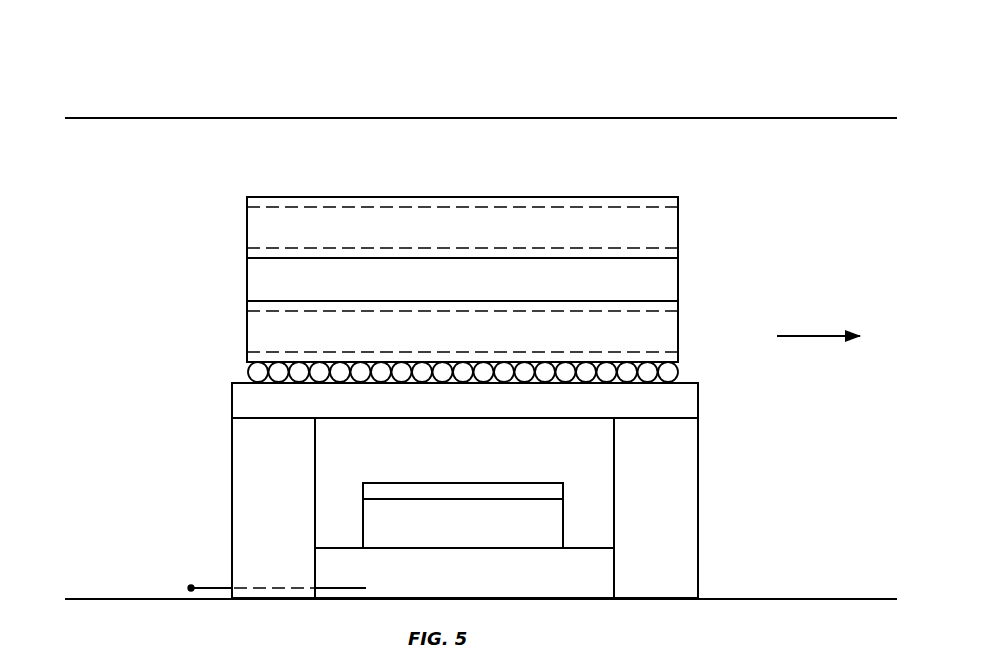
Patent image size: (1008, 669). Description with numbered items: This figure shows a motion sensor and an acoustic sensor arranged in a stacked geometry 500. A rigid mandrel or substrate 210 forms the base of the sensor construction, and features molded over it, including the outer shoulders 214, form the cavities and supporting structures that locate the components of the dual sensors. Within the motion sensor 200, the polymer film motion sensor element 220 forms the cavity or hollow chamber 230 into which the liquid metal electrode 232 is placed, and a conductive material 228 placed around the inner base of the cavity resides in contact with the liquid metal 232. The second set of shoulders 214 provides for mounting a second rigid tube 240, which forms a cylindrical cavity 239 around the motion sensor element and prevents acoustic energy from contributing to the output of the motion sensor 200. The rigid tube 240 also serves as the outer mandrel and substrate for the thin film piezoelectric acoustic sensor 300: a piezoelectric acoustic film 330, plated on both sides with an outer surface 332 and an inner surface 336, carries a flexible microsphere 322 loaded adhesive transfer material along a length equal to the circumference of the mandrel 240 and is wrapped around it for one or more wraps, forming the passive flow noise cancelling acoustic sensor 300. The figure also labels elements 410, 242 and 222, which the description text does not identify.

The stacked geometry 500 is at (148, 80).
The upper support plate 410 is at (780, 117).
The thin film piezoelectric acoustic sensor 300 is at (188, 283).
The piezoelectric acoustic film 330 is at (246, 228).
The outer surface 332 is at (633, 197).
The inner surface 336 is at (681, 248).
The intermediate layer 242 is at (681, 278).
The flexible microsphere 322 is at (243, 369).
The motion sensor 200 is at (198, 500).
The second rigid tube 240 is at (698, 398).
The outer shoulders 214 is at (231, 475).
The hollow chamber 230 is at (313, 572).
The cylindrical cavity 239 is at (485, 464).
The liquid metal electrode 232 is at (490, 583).
The polymer film motion sensor element 220 is at (565, 523).
The top surface of component 222 is at (530, 482).
The conductive material 228 is at (213, 586).
The rigid substrate 210 is at (780, 598).